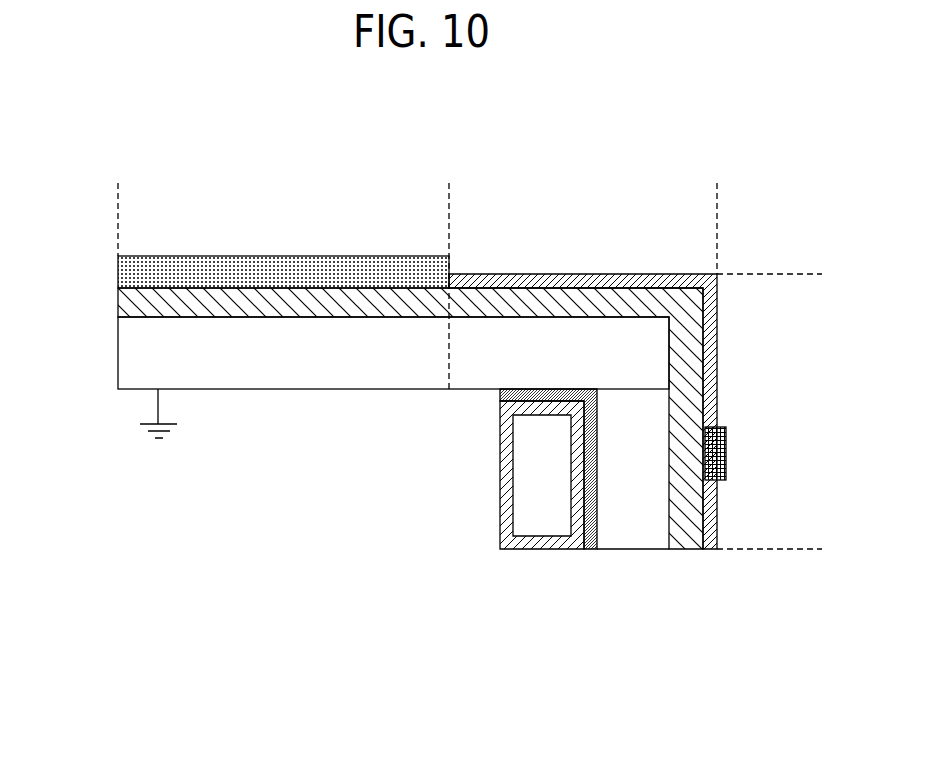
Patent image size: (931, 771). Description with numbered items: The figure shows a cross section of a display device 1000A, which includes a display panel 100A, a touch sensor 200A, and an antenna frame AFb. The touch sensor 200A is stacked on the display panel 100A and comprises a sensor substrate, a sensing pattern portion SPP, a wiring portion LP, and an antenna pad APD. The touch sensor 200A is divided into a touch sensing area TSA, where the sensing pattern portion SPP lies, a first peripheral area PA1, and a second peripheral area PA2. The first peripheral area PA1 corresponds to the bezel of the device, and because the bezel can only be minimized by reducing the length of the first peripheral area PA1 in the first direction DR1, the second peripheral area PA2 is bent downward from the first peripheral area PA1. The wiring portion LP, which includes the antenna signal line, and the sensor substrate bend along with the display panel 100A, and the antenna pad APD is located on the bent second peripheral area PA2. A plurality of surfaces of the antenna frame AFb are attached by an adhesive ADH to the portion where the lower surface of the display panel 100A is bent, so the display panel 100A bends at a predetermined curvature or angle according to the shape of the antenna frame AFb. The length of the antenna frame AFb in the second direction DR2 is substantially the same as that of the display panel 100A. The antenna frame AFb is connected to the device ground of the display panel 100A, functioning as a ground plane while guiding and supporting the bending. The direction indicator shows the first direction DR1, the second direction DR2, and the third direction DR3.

The display device 1000A is at (398, 137).
The display panel 100A is at (118, 353).
The touch sensor 200A is at (407, 457).
The sensing pattern portion SPP is at (118, 270).
The wiring portion LP is at (632, 283).
The antenna pad APD is at (720, 453).
The antenna frame AFb is at (522, 549).
The adhesive ADH is at (589, 549).
The touch sensing area TSA is at (118, 188).
The first peripheral area PA1 is at (717, 188).
The second peripheral area PA2 is at (815, 274).
The first direction DR1 is at (151, 628).
The second direction DR2 is at (181, 630).
The third direction DR3 is at (159, 620).